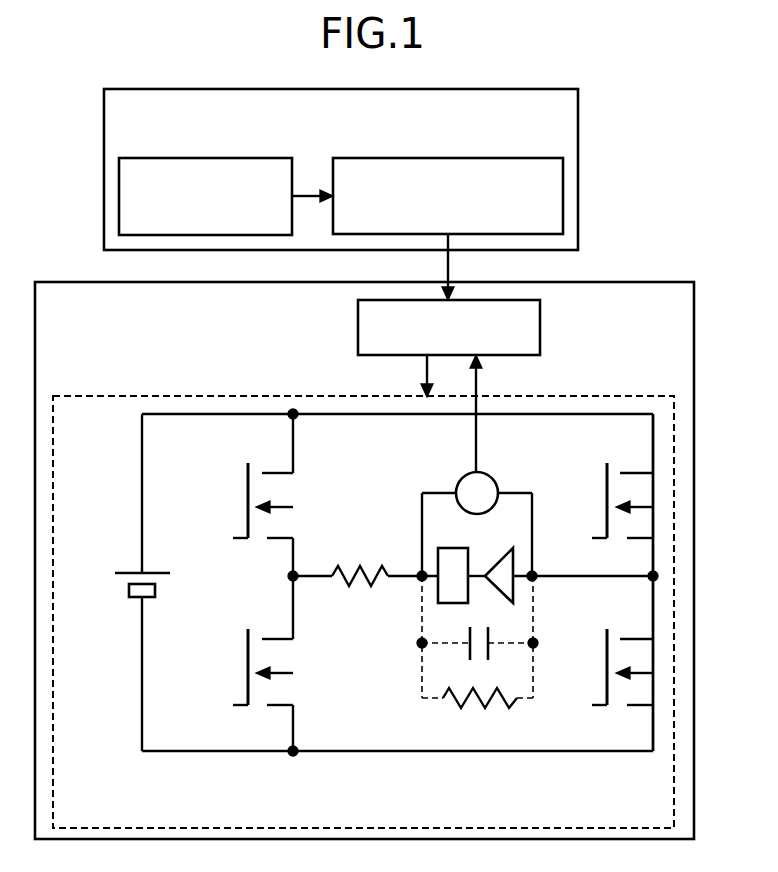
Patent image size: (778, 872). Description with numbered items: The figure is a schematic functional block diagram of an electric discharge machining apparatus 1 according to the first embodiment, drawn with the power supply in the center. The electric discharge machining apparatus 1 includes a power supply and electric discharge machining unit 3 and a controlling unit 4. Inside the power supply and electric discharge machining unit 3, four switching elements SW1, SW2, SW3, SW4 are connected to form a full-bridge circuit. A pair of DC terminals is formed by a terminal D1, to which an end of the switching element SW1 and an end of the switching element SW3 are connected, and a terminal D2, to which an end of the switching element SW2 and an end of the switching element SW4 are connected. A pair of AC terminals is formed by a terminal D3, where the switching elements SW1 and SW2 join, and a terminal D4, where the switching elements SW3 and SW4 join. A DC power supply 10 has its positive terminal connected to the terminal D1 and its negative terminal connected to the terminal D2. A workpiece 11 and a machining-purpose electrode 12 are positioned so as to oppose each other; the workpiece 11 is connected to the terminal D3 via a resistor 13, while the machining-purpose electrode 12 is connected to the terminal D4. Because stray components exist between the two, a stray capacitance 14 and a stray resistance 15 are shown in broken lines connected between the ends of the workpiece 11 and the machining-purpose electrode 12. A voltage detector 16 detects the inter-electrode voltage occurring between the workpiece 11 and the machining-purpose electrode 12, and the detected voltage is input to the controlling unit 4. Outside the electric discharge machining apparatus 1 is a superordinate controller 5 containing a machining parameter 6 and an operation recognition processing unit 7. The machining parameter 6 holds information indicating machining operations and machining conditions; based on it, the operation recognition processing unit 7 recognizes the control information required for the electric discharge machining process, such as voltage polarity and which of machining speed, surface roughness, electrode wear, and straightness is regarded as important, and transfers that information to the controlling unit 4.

The electric discharge machining apparatus 1 is at (655, 282).
The power supply and electric discharge machining unit 3 is at (631, 398).
The controlling unit 4 is at (541, 321).
The superordinate controller 5 is at (539, 89).
The machining parameter 6 is at (249, 160).
The operation recognition processing unit 7 is at (524, 160).
The DC power supply 10 is at (156, 591).
The workpiece 11 is at (458, 525).
The machining-purpose electrode 12 is at (502, 525).
The resistor 13 is at (356, 565).
The stray capacitance 14 is at (471, 655).
The stray resistance 15 is at (483, 709).
The voltage detector 16 is at (492, 479).
The switching element SW1 is at (248, 496).
The switching element SW2 is at (248, 665).
The switching element SW3 is at (607, 493).
The switching element SW4 is at (607, 660).
The terminal D1 is at (297, 418).
The terminal D2 is at (297, 747).
The terminal D3 is at (297, 580).
The terminal D4 is at (649, 580).